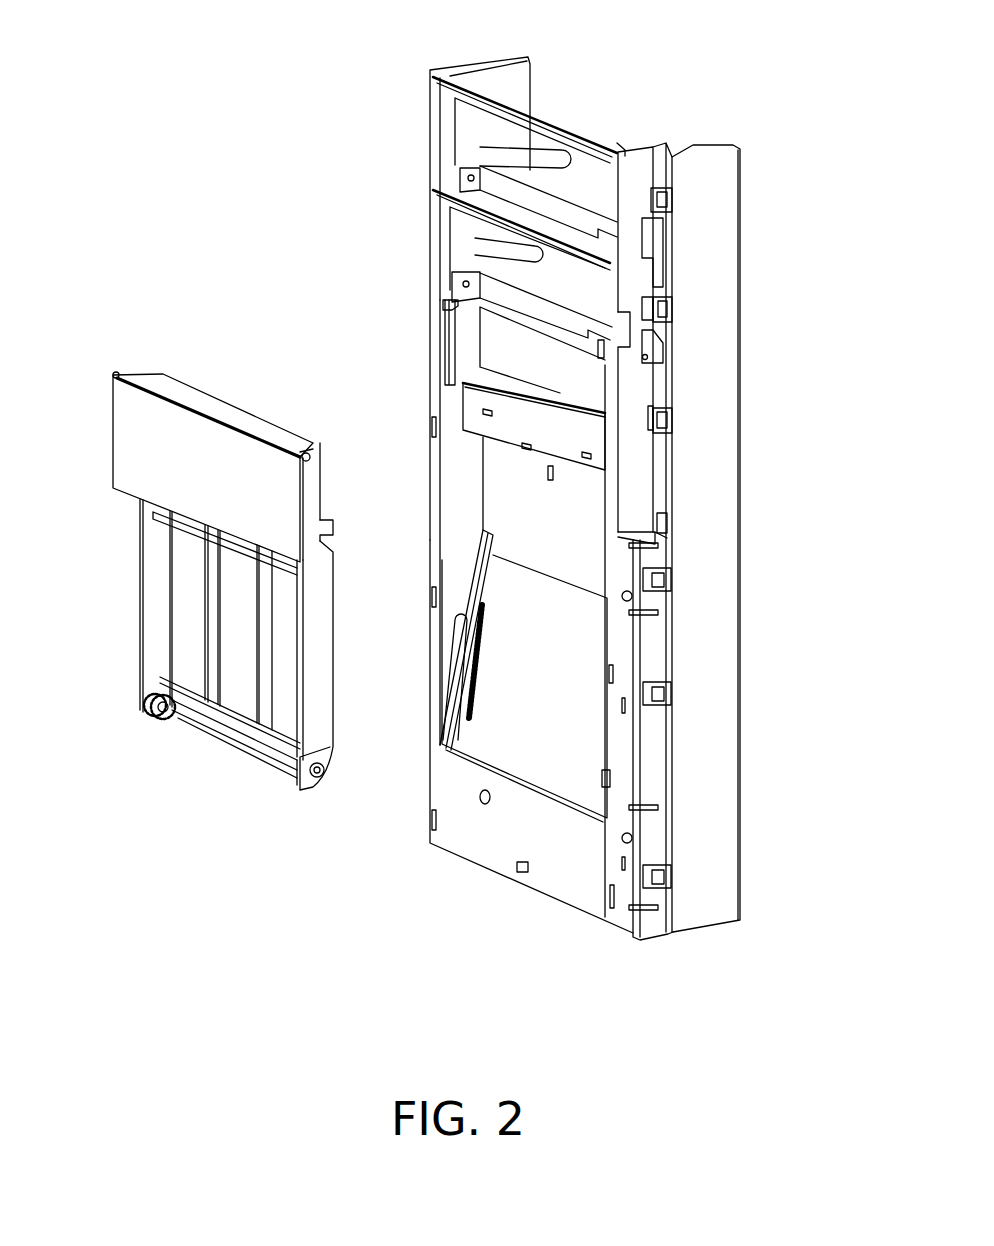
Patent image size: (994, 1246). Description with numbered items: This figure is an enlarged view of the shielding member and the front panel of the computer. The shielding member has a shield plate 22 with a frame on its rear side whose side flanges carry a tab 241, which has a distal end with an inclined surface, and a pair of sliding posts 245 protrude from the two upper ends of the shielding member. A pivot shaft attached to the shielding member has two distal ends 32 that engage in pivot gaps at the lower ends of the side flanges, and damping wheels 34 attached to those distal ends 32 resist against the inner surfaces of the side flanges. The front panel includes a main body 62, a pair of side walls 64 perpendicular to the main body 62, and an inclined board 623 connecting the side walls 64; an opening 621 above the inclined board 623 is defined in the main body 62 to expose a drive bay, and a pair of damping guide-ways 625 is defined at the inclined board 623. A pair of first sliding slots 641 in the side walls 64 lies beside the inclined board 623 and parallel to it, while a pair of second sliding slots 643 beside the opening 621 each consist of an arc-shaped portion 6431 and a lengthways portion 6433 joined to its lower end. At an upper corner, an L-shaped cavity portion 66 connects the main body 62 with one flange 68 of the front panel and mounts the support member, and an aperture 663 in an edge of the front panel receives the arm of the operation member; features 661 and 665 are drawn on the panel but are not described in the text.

The shield plate 22 is at (137, 435).
The tab 241 is at (337, 527).
The sliding posts 245 is at (314, 458).
The distal ends 32 is at (298, 773).
The damping wheels 34 is at (143, 712).
The main body 62 is at (491, 630).
The opening 621 is at (670, 418).
The inclined board 623 is at (517, 742).
The damping guide-ways 625 is at (473, 621).
The side walls 64 is at (533, 309).
The first sliding slots 641 is at (446, 677).
The second sliding slots 643 is at (357, 335).
The arc-shaped portion 6431 is at (445, 299).
The lengthways portion 6433 is at (445, 357).
The L-shaped cavity portion 66 is at (721, 506).
The latch tab 661 is at (672, 198).
The aperture 663 is at (672, 380).
The side panel 665 is at (660, 485).
The flange 68 is at (492, 78).